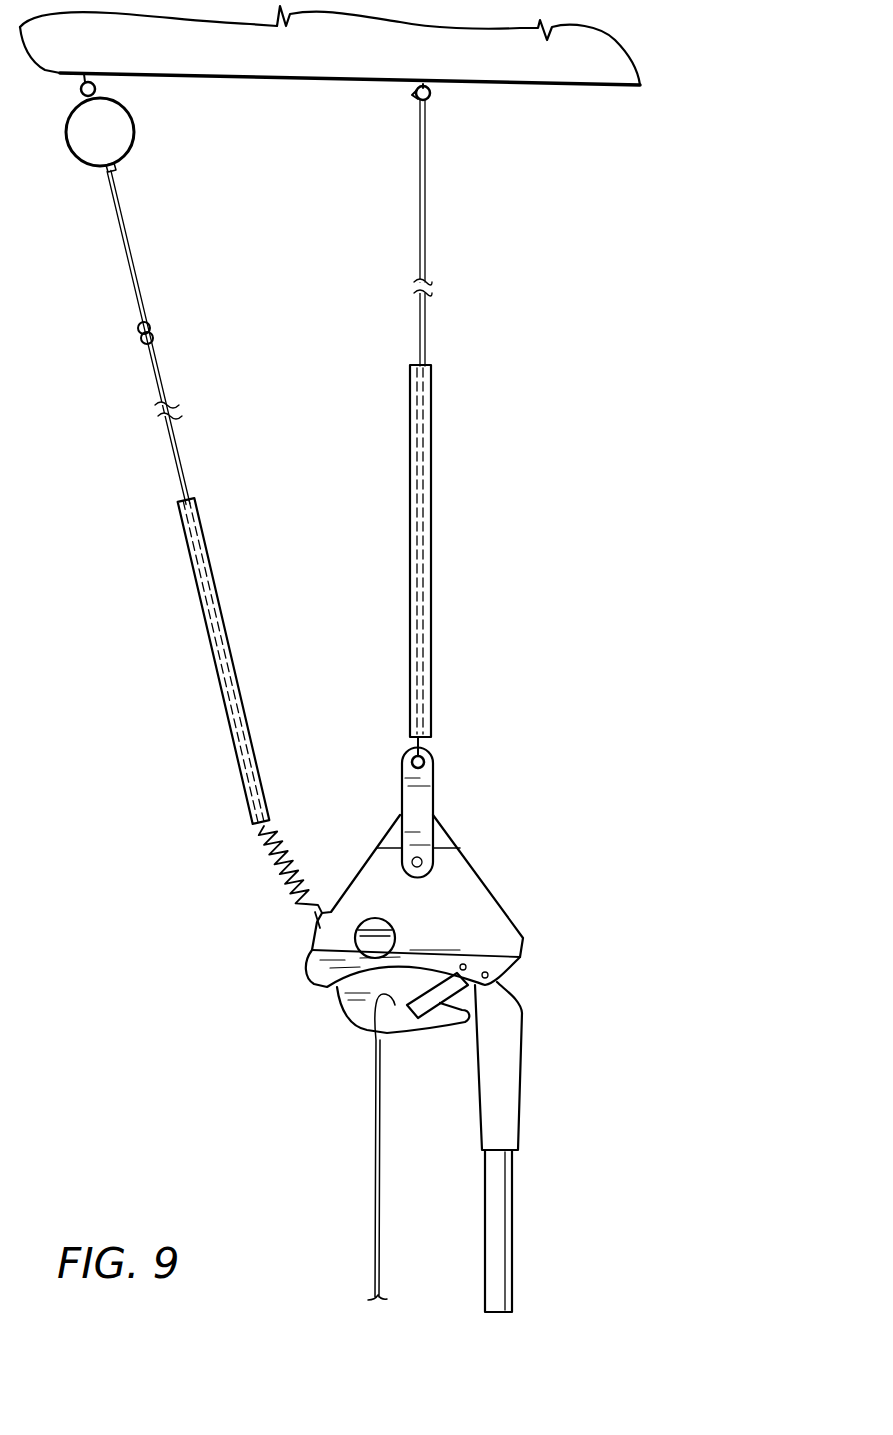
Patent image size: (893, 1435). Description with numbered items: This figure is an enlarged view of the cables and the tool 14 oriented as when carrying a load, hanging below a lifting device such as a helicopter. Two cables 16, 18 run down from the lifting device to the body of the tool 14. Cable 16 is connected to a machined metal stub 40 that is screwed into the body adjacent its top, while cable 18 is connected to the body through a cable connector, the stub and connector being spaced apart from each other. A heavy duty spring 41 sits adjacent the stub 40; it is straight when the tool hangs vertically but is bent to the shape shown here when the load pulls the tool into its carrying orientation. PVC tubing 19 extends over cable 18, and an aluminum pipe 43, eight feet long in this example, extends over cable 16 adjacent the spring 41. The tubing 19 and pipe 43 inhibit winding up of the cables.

The exercise apparatus 14 is at (484, 850).
The cable 16 is at (170, 455).
The cable 18 is at (426, 328).
The tubing 19 is at (432, 538).
The stub 40 is at (298, 905).
The spring 41 is at (258, 847).
The pipe 43 is at (215, 663).